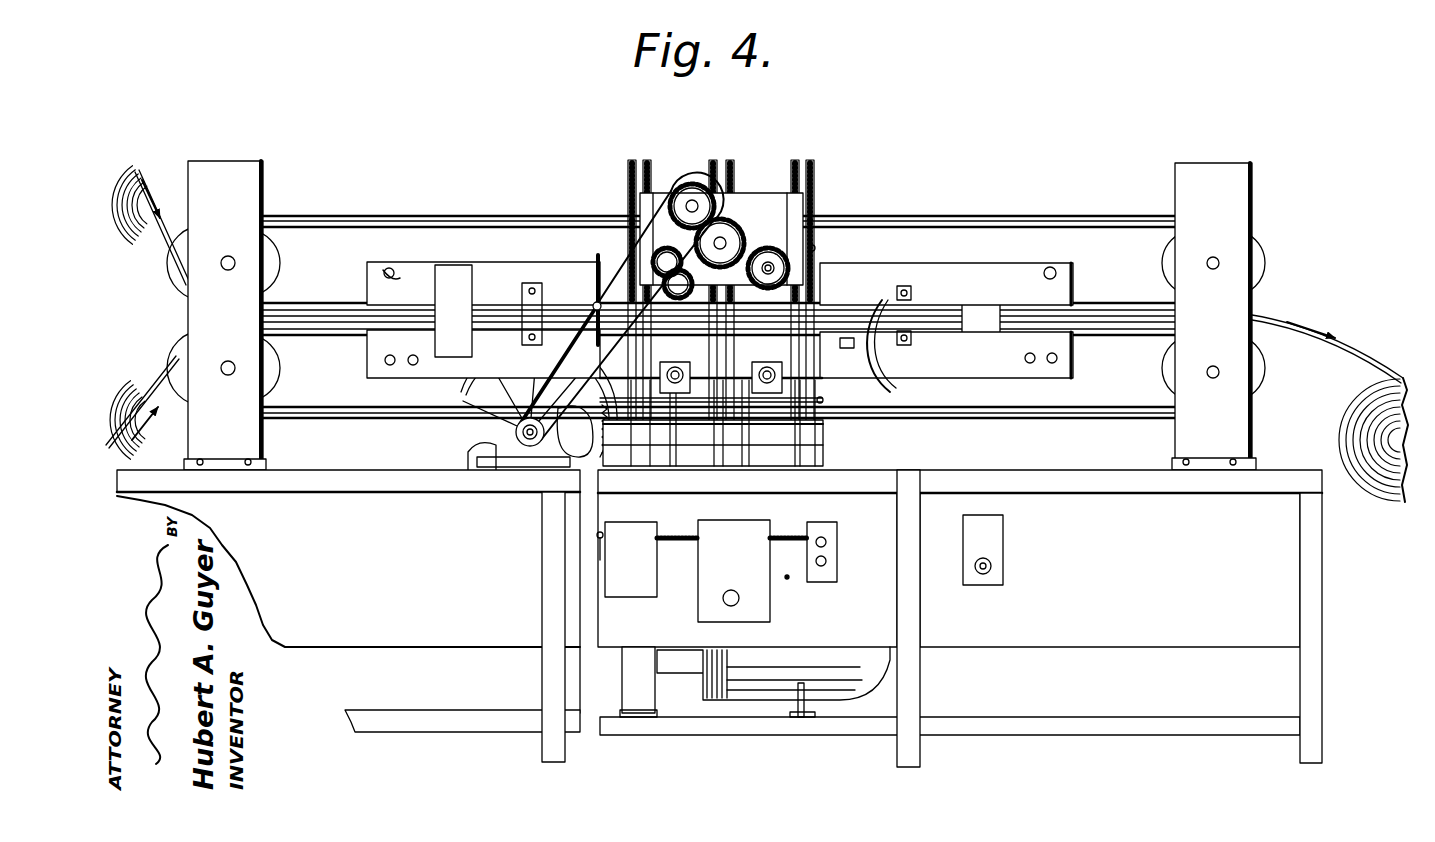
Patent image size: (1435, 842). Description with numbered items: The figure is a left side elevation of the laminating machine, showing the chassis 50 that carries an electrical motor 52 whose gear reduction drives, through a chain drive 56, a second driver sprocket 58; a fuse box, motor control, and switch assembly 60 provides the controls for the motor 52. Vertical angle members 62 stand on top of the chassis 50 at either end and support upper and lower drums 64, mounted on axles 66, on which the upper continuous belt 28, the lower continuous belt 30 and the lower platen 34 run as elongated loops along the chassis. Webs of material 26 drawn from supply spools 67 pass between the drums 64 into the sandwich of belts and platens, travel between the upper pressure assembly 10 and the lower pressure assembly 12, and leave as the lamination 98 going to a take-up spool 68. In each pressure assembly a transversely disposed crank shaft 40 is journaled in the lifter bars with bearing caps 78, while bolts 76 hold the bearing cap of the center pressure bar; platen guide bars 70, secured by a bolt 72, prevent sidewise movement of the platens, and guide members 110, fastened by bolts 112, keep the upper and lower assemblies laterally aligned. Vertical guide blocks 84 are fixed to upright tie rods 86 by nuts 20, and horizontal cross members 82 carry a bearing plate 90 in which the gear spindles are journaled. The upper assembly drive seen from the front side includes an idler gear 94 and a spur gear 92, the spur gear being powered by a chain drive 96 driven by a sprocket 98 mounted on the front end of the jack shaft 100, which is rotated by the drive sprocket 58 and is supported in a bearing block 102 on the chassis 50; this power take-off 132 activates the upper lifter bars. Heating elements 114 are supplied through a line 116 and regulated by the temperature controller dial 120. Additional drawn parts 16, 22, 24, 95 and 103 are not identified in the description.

The upper pressure assembly 10 is at (362, 284).
The lower pressure assembly 12 is at (362, 357).
The base 16 is at (511, 478).
The nuts 20 is at (792, 268).
The frame cross bar 22 is at (826, 428).
The frame lower bar 24 is at (812, 455).
The webs of material 26 is at (168, 372).
The upper continuous belt 28 is at (1140, 217).
The lower continuous belt 30 is at (1140, 228).
The platen 34 is at (1146, 412).
The crank shaft 40 is at (762, 269).
The chassis 50 is at (1312, 522).
The electrical motor 52 is at (885, 663).
The chain drive 56 is at (445, 478).
The drive sprocket 58 is at (452, 446).
The fuse box, motor control, and switch assembly 60 is at (789, 579).
The vertical angle members 62 is at (207, 438).
The drums 64 is at (178, 253).
The axles 66 is at (1213, 270).
The supply spool 67 is at (118, 170).
The take-up spool 68 is at (1372, 438).
The platen guide bars 70 is at (412, 275).
The bolt 72 is at (386, 270).
The bolts 76 is at (420, 409).
The bearing caps 78 is at (678, 391).
The horizontal cross members 82 is at (836, 352).
The vertical guide blocks 84 is at (813, 246).
The tie rods 86 is at (632, 160).
The bearing plate 90 is at (770, 205).
The spur gear 92 is at (662, 200).
The idler gear 94 is at (735, 225).
The sprocket 95 is at (692, 200).
The chain drive 96 is at (630, 262).
The sprocket 98 is at (1347, 347).
The jack shaft 100 is at (523, 443).
The bearing block 102 is at (530, 346).
The bearing block 103 is at (766, 362).
The guide members 110 is at (468, 272).
The bolts 112 is at (450, 272).
The heating elements 114 is at (874, 282).
The line 116 is at (900, 388).
The dial 120 is at (1000, 573).
The power take-off 132 is at (585, 300).